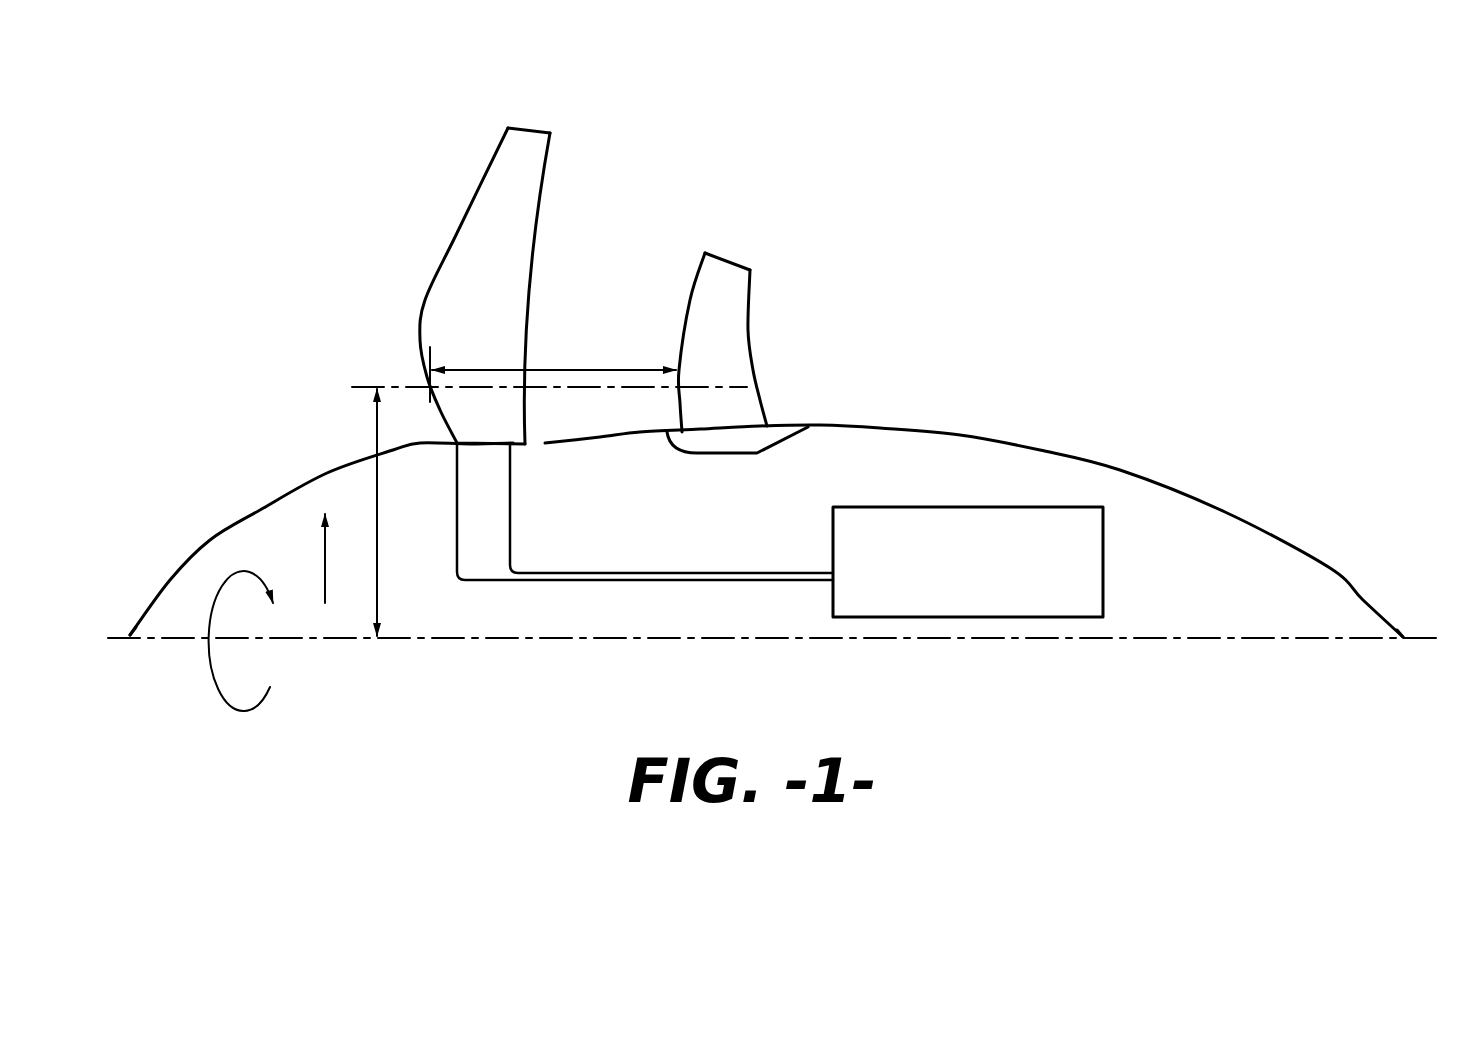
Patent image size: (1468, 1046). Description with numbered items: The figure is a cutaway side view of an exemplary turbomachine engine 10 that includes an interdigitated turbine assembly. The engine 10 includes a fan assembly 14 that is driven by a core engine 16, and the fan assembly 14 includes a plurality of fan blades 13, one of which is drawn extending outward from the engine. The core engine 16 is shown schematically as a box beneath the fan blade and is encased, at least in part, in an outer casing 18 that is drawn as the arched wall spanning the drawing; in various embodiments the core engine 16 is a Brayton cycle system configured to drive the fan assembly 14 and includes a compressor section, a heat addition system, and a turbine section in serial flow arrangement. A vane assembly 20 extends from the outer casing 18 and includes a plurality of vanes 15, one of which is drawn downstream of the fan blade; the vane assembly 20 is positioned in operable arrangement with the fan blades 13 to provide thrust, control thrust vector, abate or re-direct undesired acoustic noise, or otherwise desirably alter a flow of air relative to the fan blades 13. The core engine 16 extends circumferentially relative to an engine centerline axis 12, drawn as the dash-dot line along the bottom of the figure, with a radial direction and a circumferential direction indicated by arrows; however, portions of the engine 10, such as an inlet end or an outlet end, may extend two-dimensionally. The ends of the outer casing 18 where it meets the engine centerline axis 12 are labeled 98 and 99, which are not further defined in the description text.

The engine 10 is at (767, 419).
The engine centerline axis 12 is at (457, 640).
The fan blades 13 is at (507, 212).
The fan assembly 14 is at (470, 286).
The vanes 15 is at (705, 315).
The core engine 16 is at (780, 530).
The outer casing 18 is at (957, 432).
The vane assembly 20 is at (752, 342).
The forward end 98 is at (126, 634).
The aft end 99 is at (1407, 635).